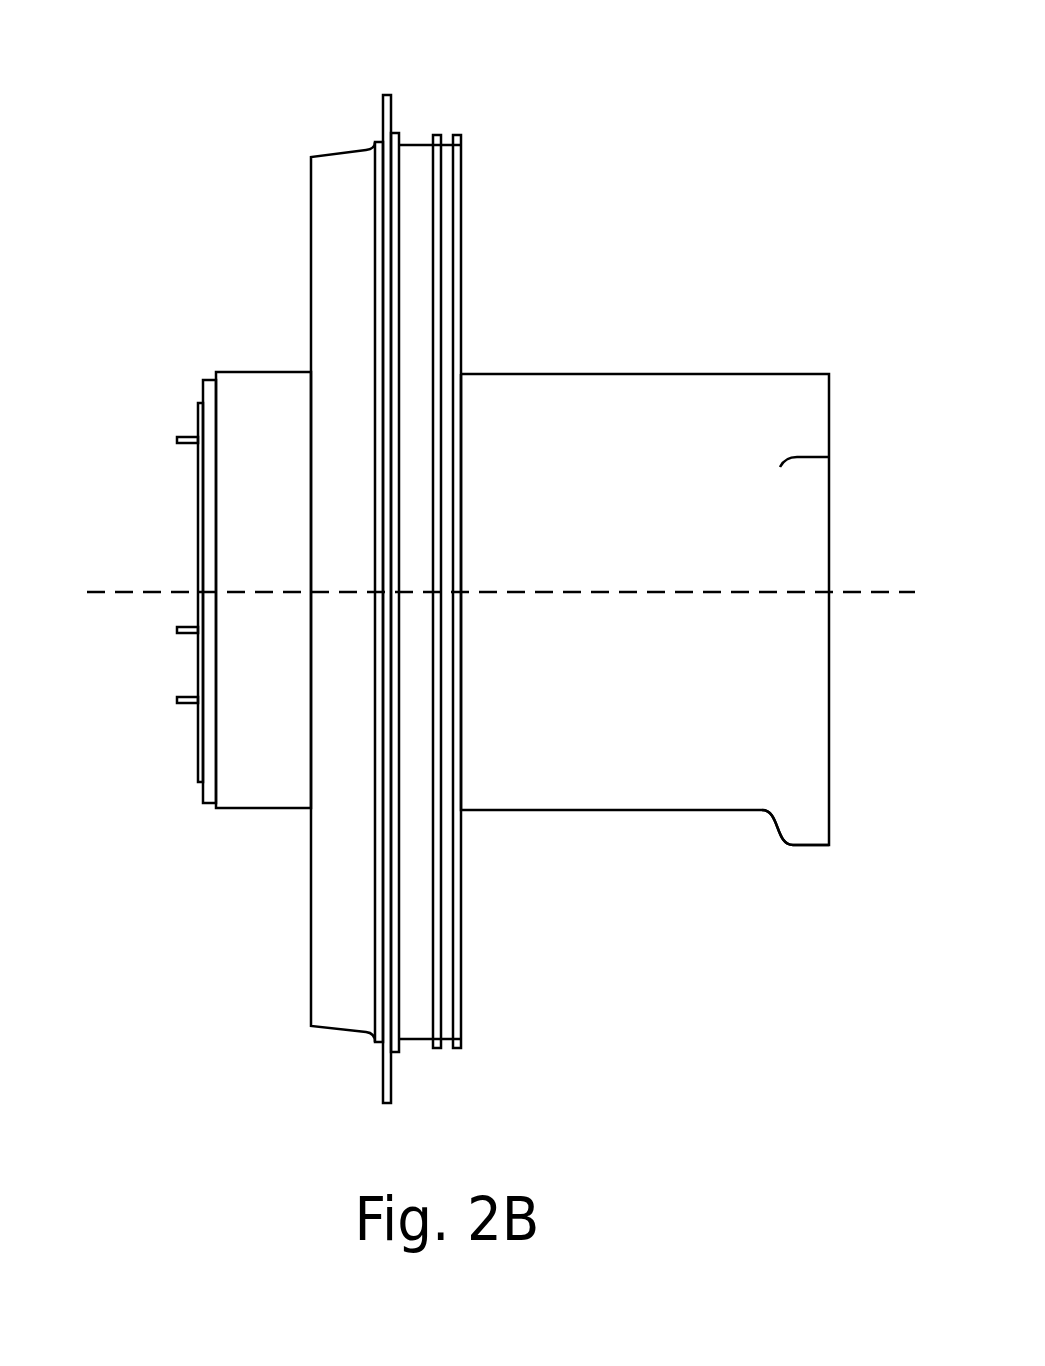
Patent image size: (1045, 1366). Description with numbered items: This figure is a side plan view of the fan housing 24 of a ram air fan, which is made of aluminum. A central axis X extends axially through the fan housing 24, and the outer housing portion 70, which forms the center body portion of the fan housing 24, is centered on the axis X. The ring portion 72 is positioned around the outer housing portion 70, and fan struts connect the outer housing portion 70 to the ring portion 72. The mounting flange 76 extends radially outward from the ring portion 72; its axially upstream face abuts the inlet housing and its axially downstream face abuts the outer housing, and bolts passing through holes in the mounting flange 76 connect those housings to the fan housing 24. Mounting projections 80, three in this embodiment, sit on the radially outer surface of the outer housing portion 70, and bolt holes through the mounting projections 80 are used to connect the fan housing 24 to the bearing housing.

The fan housing 24 is at (484, 555).
The ring portion 72 is at (340, 178).
The mounting flange 76 is at (395, 103).
The outer housing portion 70 is at (622, 413).
The mounting projections 80 is at (805, 823).
The central axis X is at (877, 592).